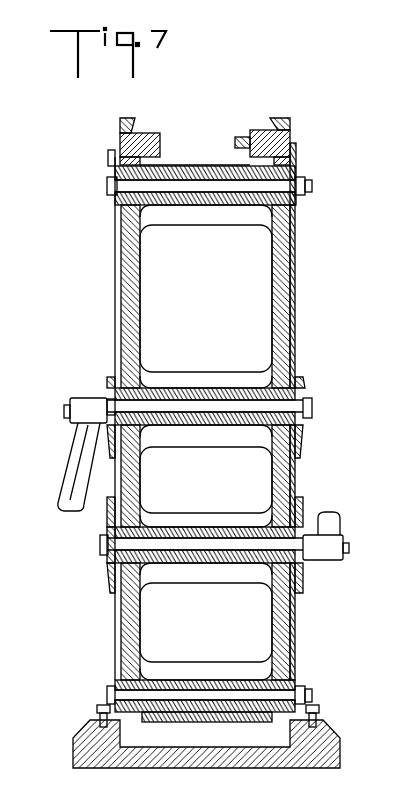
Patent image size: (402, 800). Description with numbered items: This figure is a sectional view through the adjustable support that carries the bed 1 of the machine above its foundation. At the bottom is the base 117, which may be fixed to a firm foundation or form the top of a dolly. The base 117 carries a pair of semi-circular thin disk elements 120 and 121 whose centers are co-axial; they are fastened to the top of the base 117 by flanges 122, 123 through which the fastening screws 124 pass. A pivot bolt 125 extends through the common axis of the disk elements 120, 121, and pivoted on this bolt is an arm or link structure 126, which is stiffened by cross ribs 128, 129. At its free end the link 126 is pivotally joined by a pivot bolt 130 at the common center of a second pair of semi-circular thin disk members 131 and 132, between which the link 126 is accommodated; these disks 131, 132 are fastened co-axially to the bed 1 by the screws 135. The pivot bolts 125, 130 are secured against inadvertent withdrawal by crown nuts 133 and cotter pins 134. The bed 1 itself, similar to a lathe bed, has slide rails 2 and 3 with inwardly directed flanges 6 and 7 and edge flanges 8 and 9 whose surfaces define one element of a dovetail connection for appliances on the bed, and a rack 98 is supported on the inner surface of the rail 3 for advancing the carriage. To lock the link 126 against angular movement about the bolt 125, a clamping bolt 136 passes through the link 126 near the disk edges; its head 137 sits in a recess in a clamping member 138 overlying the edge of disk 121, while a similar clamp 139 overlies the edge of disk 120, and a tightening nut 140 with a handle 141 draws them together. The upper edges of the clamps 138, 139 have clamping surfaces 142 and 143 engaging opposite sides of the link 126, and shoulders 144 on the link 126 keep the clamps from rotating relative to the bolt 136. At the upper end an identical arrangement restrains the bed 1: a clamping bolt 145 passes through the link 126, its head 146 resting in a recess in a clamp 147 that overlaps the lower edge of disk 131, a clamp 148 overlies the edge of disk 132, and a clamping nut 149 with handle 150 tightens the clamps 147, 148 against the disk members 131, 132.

The bed 1 is at (291, 146).
The slide rail 2 is at (118, 137).
The slide rail 3 is at (292, 135).
The inwardly directed flange 6 is at (258, 130).
The inwardly directed flange 7 is at (152, 133).
The edge flange 8 is at (283, 118).
The edge flange 9 is at (128, 120).
The rack 98 is at (241, 137).
The base 117 is at (336, 741).
The semi-circular thin disk element 120 is at (297, 629).
The semi-circular thin disk element 121 is at (117, 628).
The flange 122 is at (320, 713).
The flange 123 is at (96, 713).
The fastening screw 124 is at (107, 700).
The pivot bolt 125 is at (248, 697).
The arm or link structure 126 is at (282, 283).
The cross rib 128 is at (199, 523).
The cross rib 129 is at (300, 593).
The pivot bolt 130 is at (164, 187).
The semi-circular thin disk member 131 is at (296, 249).
The semi-circular thin disk member 132 is at (118, 269).
The crown nut 133 is at (307, 187).
The cotter pin 134 is at (312, 192).
The screw 135 is at (300, 161).
The clamping bolt 136 is at (302, 512).
The head 137 is at (111, 575).
The clamping member 138 is at (100, 546).
The clamp 139 is at (328, 560).
The tightening nut 140 is at (345, 541).
The handle 141 is at (330, 517).
The clamping surface 142 is at (116, 503).
The clamping surface 143 is at (290, 501).
The shoulder 144 is at (117, 500).
The clamping bolt 145 is at (231, 402).
The head 146 is at (314, 409).
The clamp 147 is at (306, 390).
The clamp 148 is at (111, 383).
The clamping nut 149 is at (83, 403).
The handle 150 is at (70, 479).